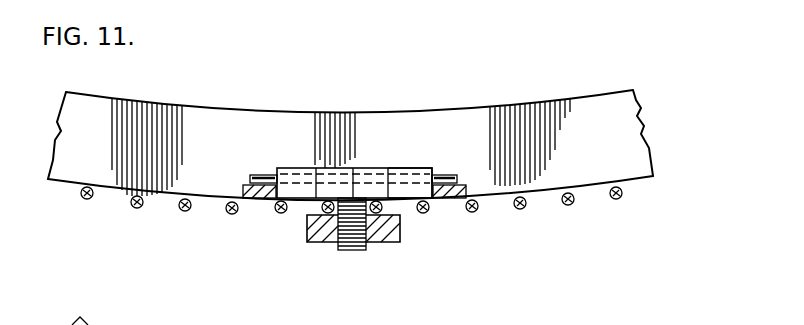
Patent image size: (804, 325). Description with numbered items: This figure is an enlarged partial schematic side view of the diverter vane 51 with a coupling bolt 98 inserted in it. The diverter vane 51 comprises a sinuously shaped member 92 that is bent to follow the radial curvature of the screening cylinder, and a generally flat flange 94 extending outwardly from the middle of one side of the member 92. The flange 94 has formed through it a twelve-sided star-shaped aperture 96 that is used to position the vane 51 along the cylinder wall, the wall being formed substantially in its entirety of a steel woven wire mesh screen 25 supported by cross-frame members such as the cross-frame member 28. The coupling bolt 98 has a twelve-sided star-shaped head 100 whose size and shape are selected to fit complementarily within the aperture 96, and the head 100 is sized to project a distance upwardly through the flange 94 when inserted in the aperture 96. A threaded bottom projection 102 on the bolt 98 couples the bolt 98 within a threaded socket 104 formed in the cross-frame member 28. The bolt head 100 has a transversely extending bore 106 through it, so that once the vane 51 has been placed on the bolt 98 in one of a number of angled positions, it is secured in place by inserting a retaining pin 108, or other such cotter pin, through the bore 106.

The diverter vane 51 is at (594, 122).
The sinuously shaped member 92 is at (182, 124).
The steel woven wire mesh screen 25 is at (571, 207).
The star-shaped head 100 is at (357, 172).
The transversely extending bore 106 is at (305, 175).
The retaining pin 108 is at (440, 175).
The coupling bolt 98 is at (403, 165).
The star-shaped aperture 96 is at (268, 203).
The flange 94 is at (454, 200).
The threaded bottom projection 102 is at (344, 249).
The threaded socket 104 is at (374, 243).
The cross-frame member 28 is at (391, 244).